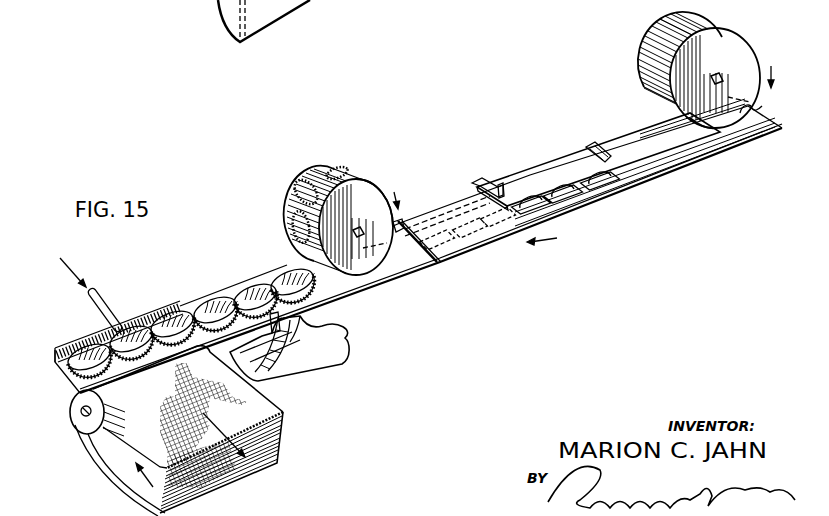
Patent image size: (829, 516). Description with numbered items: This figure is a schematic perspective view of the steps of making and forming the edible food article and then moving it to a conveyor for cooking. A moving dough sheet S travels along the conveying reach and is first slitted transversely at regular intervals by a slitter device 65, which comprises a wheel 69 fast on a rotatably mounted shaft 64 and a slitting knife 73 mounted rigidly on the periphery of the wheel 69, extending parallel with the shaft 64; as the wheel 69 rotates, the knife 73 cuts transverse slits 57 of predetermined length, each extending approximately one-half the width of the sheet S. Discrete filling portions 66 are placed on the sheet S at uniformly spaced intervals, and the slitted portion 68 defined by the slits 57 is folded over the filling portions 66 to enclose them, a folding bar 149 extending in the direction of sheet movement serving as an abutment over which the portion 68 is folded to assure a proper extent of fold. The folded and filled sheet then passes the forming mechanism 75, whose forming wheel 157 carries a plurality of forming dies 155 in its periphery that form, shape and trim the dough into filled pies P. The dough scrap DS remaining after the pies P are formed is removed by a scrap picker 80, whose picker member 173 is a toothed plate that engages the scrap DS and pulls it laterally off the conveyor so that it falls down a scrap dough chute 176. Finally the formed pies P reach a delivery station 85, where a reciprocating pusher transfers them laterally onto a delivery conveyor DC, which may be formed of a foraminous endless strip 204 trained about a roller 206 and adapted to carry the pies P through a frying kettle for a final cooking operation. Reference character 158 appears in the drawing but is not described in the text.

The transverse slits 57 is at (462, 218).
The shaft 64 is at (727, 80).
The slitter device 65 is at (696, 96).
The filling portions 66 is at (573, 195).
The slitted portion 68 is at (537, 162).
The wheel 69 is at (728, 32).
The slitting knife 73 is at (707, 135).
The forming mechanism 75 is at (343, 195).
The scrap picker 80 is at (309, 339).
The delivery station 85 is at (143, 290).
The folding bar 149 is at (500, 185).
The forming dies 155 is at (313, 177).
The forming wheel 157 is at (365, 193).
The pin 158 is at (359, 232).
The picker member 173 is at (330, 308).
The scrap dough chute 176 is at (297, 357).
The foraminous endless strip 204 is at (272, 412).
The roller 206 is at (76, 425).
The delivery conveyor DC is at (178, 431).
The dough scrap DS is at (292, 341).
The filled pie P is at (123, 345).
The dough sheet S is at (647, 187).